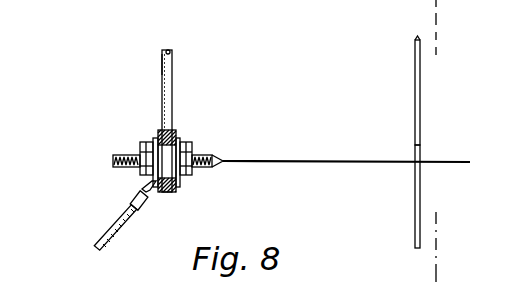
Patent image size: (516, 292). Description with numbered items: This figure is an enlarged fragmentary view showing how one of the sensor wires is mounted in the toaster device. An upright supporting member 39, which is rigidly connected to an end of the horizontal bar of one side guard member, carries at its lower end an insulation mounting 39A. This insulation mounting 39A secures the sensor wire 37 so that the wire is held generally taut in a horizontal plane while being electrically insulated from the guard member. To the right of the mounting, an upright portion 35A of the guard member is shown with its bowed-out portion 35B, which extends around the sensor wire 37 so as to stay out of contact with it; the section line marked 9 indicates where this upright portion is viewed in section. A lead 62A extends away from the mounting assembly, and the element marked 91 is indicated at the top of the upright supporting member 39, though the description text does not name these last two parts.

The section line 9- 9 is at (439, 15).
The spaced upright portions 35A is at (420, 80).
The bowed-out portions 35B is at (420, 145).
The sensor wire 37 is at (265, 160).
The upright supporting member 39 is at (173, 92).
The insulation mounting 39A is at (178, 138).
The lead wire 62A is at (128, 223).
The rod 91 is at (160, 62).